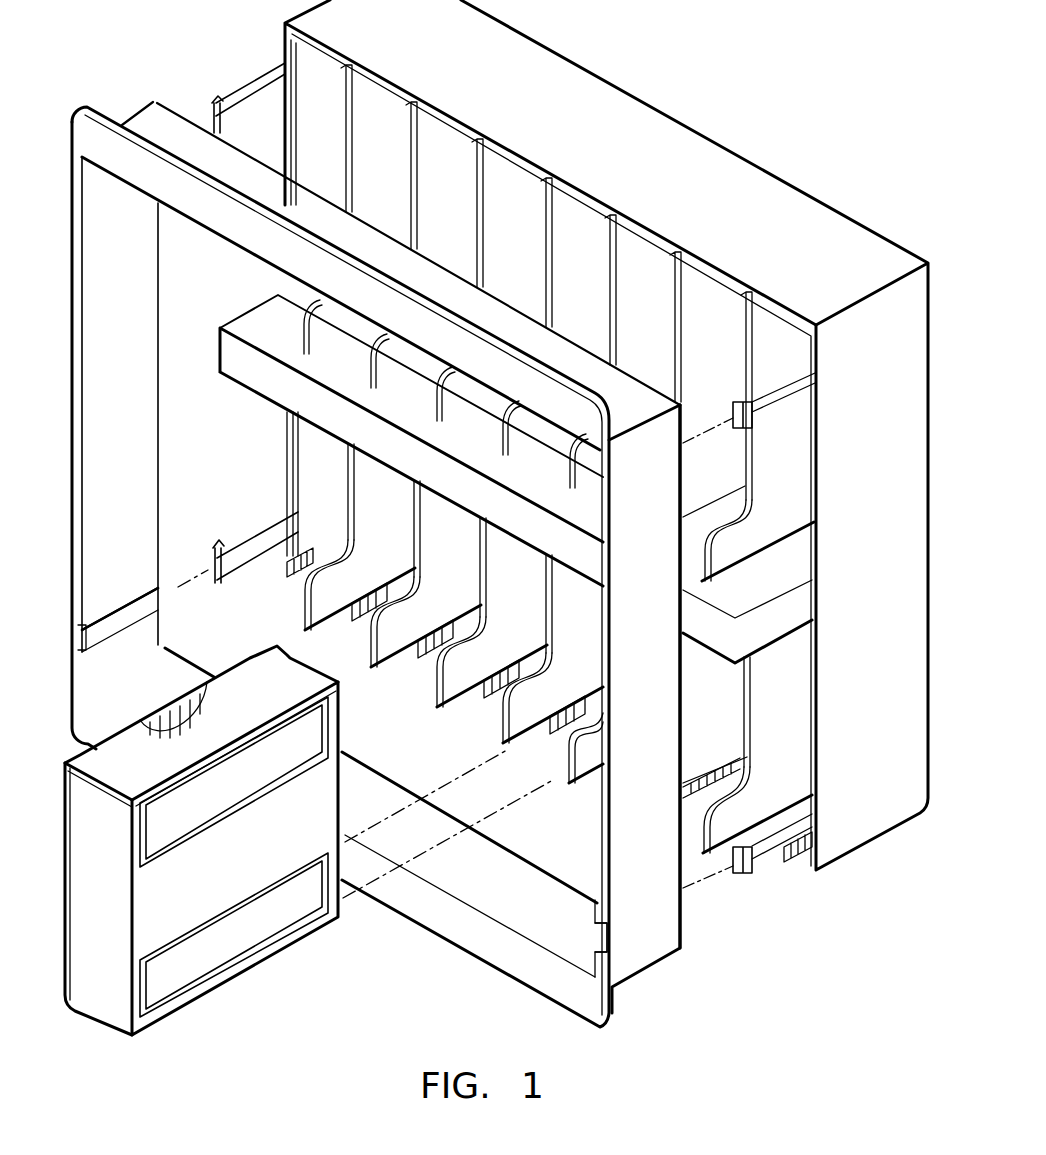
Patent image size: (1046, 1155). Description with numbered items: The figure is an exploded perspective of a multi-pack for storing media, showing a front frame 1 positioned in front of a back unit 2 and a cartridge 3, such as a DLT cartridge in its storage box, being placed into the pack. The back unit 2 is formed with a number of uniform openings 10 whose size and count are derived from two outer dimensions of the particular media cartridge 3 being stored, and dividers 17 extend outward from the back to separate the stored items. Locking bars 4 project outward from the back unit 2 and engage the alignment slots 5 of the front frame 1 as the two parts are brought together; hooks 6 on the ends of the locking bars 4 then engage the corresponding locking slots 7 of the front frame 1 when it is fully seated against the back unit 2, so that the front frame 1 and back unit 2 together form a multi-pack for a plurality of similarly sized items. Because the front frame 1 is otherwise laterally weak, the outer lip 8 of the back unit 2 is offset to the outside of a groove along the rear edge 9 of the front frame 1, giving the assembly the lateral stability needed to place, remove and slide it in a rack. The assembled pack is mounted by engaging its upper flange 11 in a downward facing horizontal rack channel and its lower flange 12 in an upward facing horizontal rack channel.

The front frame 1 is at (641, 722).
The back unit 2 is at (856, 606).
The cartridge 3 is at (230, 855).
The locking bar 4 is at (767, 407).
The alignment slot 5 is at (125, 613).
The hook 6 is at (735, 432).
The locking slot 7 is at (80, 637).
The outer lip 8 is at (293, 575).
The rear edge 9 is at (683, 935).
The uniform opening 10 is at (518, 190).
The upper flange 11 is at (437, 373).
The lower flange 12 is at (518, 962).
The divider 17 is at (392, 645).